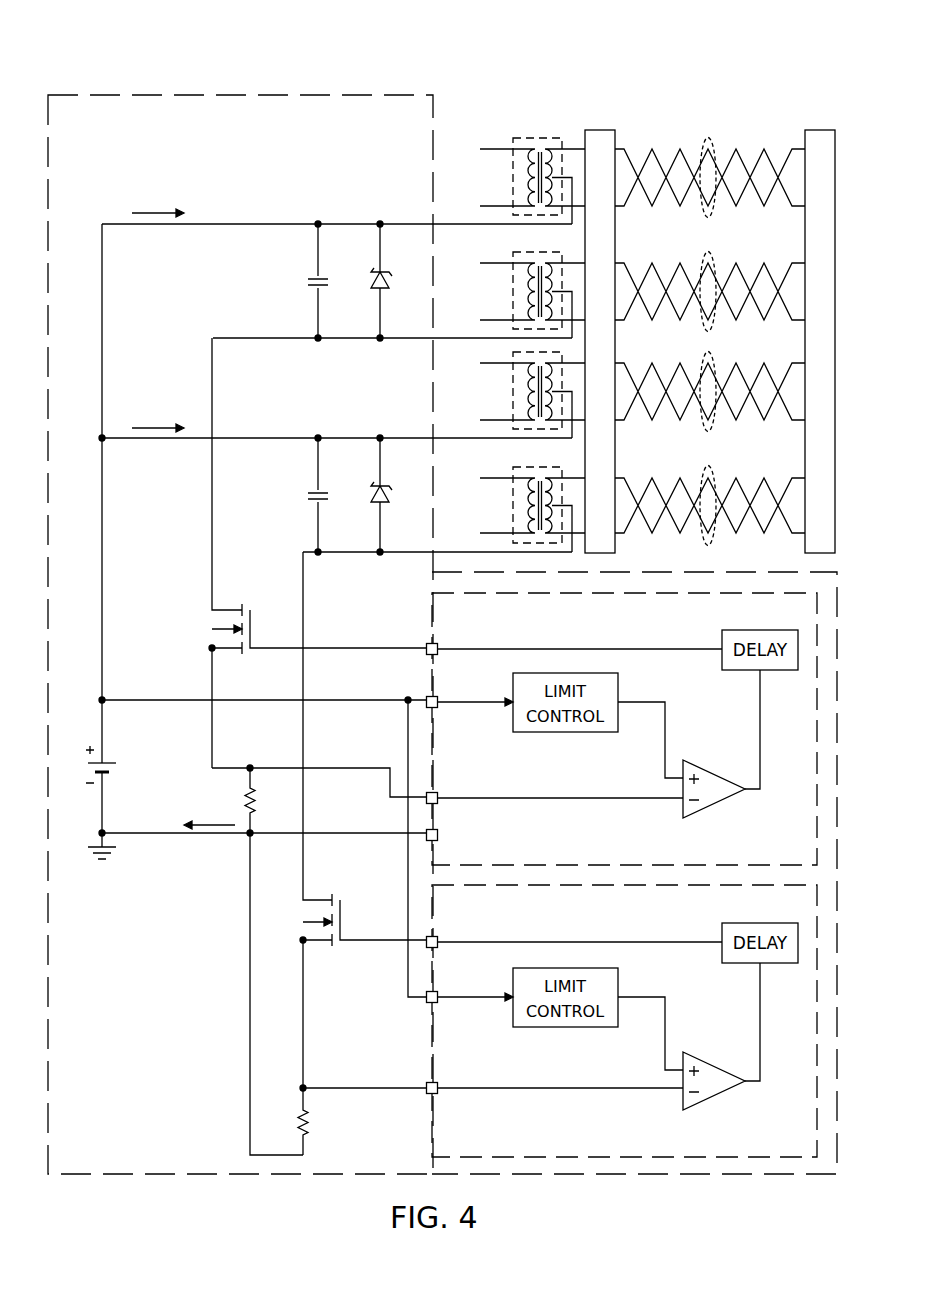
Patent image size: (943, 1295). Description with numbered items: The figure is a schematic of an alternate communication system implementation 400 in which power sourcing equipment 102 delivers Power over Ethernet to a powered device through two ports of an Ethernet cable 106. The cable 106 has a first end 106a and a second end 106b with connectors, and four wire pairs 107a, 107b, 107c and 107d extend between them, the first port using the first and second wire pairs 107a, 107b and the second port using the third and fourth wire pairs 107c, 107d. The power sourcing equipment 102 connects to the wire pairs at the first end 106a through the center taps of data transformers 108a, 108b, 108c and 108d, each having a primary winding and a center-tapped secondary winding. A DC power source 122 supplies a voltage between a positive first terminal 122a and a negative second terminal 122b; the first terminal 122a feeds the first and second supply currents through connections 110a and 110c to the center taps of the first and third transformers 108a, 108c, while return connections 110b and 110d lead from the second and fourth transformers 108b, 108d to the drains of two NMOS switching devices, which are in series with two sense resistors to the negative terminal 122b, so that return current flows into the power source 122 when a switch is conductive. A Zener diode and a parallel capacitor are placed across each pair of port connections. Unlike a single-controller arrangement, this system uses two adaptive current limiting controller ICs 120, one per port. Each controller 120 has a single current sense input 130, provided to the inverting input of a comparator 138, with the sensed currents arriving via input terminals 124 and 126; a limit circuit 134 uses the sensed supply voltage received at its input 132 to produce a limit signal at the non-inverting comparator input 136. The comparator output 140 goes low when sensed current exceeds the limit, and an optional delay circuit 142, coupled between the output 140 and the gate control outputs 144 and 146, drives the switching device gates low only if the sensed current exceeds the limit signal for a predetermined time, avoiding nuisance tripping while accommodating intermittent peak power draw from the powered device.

The communication system implementation 400 is at (604, 62).
The power sourcing equipment 102 is at (259, 165).
The Ethernet cable 106 is at (832, 115).
The first end 106a is at (617, 240).
The second end 106b is at (806, 352).
The first wire pair 107a is at (713, 139).
The second wire pair 107b is at (714, 256).
The third wire pair 107c is at (704, 357).
The fourth wire pair 107d is at (714, 470).
The first data transformer 108a is at (513, 190).
The second data transformer 108b is at (513, 303).
The third data transformer 108c is at (513, 404).
The fourth data transformer 108d is at (513, 518).
The first connection 110a is at (405, 223).
The return connection 110b is at (354, 340).
The third connection 110c is at (405, 437).
The return connection 110d is at (405, 554).
The controller IC 120 is at (583, 845).
The power source 122 is at (124, 769).
The first terminal 122a is at (104, 742).
The second terminal 122b is at (104, 797).
The input terminal 124 is at (355, 769).
The input terminal 126 is at (394, 1089).
The current sense input 130 is at (648, 802).
The voltage sense input line (VSEN) 132 is at (463, 705).
The limit circuit 134 is at (568, 735).
The second comparator input 136 is at (661, 747).
The comparator 138 is at (718, 806).
The comparator output 140 is at (757, 722).
The delay circuit 142 is at (772, 672).
The switch control output terminal 144 is at (688, 652).
The switch control output terminal 146 is at (688, 945).